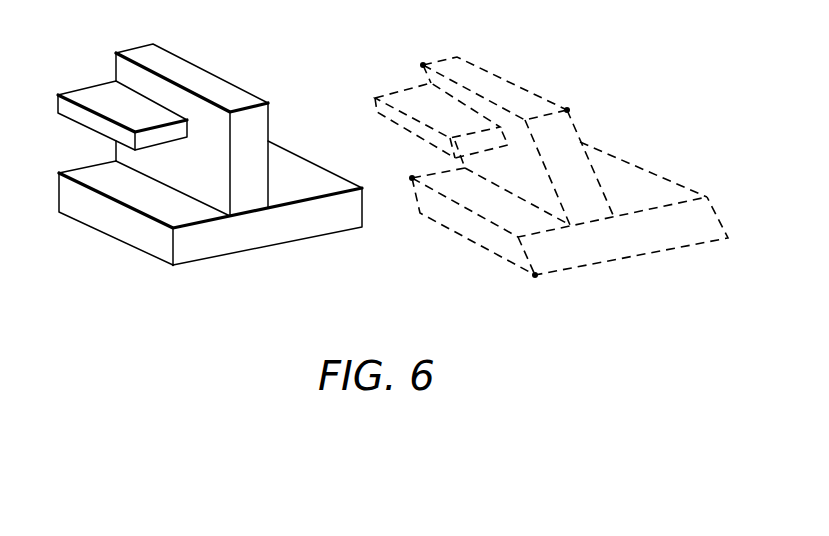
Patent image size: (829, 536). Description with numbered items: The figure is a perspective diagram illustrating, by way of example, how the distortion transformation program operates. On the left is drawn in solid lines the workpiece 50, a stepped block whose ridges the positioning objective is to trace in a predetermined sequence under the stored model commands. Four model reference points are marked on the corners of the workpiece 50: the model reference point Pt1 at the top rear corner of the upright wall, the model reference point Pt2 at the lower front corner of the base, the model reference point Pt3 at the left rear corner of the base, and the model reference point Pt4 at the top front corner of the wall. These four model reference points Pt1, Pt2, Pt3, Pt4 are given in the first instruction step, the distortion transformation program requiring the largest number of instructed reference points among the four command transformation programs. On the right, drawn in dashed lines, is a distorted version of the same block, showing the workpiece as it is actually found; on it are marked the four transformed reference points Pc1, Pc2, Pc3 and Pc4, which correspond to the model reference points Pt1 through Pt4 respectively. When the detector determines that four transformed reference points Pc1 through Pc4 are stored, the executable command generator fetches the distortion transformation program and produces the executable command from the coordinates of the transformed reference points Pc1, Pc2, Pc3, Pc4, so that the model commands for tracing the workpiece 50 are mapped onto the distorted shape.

The workpiece 50 is at (260, 233).
The model reference point Pt1 is at (268, 103).
The model reference point Pt2 is at (173, 267).
The model reference point Pt3 is at (59, 173).
The model reference point Pt4 is at (116, 53).
The transformed reference point Pc1 is at (567, 110).
The transformed reference point Pc2 is at (535, 275).
The transformed reference point Pc3 is at (412, 178).
The transformed reference point Pc4 is at (423, 65).